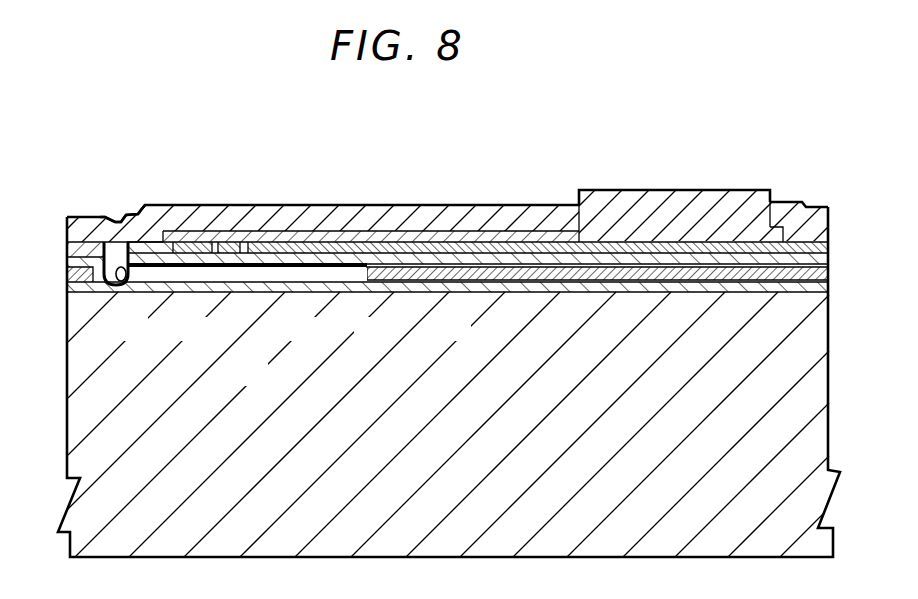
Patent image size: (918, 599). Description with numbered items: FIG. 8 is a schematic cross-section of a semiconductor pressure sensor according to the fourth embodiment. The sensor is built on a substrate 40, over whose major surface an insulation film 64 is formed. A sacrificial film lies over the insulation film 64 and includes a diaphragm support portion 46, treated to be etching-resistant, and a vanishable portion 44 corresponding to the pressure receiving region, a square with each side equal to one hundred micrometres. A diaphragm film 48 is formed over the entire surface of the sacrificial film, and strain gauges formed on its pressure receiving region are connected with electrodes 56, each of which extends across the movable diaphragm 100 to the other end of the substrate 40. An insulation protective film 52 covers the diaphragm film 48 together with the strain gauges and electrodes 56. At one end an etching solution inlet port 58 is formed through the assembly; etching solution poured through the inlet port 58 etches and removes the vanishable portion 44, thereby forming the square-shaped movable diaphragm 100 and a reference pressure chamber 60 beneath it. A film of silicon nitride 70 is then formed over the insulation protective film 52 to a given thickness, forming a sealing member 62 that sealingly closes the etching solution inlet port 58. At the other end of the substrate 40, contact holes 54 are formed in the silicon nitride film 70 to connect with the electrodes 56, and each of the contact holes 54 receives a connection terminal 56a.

The substrate 40 is at (808, 378).
The vanishable portion 44 is at (290, 268).
The diaphragm support portion 46 is at (820, 270).
The diaphragm film 48 is at (826, 251).
The insulation protective film 52 is at (400, 235).
The contact holes 54 is at (225, 243).
The electrodes 56 is at (455, 240).
The connection terminal 56a is at (690, 215).
The etching solution inlet port 58 is at (120, 283).
The reference pressure chamber 60 is at (190, 268).
The sealing member 62 is at (119, 220).
The insulation film 64 is at (67, 300).
The silicon nitride film 70 is at (317, 222).
The movable diaphragm 100 is at (233, 268).